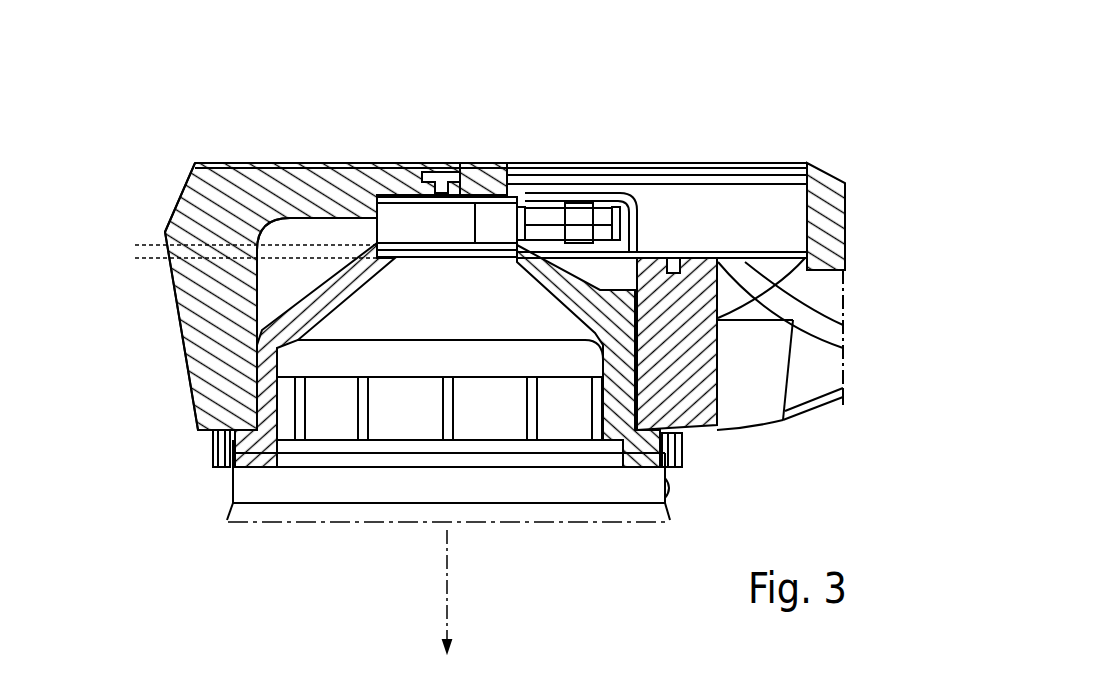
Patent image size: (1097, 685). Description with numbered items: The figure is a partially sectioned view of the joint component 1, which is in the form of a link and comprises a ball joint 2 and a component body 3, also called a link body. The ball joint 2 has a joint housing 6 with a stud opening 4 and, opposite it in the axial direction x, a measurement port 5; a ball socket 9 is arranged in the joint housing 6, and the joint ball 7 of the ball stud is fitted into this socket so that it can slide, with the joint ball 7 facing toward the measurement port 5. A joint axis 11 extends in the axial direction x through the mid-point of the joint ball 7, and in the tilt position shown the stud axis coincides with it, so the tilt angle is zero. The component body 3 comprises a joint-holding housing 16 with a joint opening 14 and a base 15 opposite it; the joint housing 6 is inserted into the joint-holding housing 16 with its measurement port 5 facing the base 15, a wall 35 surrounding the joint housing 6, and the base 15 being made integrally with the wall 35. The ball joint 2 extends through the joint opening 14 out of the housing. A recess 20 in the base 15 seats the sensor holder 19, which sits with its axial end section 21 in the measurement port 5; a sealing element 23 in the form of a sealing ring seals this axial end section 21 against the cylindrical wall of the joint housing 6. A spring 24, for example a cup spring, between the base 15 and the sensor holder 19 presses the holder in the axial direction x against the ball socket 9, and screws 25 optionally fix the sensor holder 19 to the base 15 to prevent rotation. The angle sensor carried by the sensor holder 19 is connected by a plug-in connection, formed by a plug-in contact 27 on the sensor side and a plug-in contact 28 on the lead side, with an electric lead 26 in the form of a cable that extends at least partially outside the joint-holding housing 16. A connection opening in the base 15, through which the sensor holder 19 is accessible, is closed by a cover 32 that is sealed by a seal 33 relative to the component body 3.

The joint component 1 is at (467, 86).
The ball joint 2 is at (200, 476).
The component body 3 is at (834, 165).
The stud opening 4 is at (262, 478).
The measurement port 5 is at (372, 240).
The joint housing 6 is at (290, 352).
The joint ball 7 is at (445, 447).
The ball socket 9 is at (290, 372).
The joint axis 11 is at (452, 558).
The joint opening 14 is at (213, 455).
The base 15 is at (285, 183).
The joint-holding housing 16 is at (176, 298).
The sensor holder 19 is at (410, 216).
The recess 20 is at (357, 215).
The axial end section 21 is at (133, 241).
The sealing element 23 is at (472, 250).
The spring 24 is at (425, 178).
The screws 25 is at (450, 170).
The electric lead 26 is at (843, 348).
The plug-in contact on the sensor side 27 is at (540, 213).
The plug-in contact on the lead side 28 is at (578, 212).
The cover 32 is at (670, 172).
The seal 33 is at (742, 184).
The wall 35 is at (245, 312).
The axial direction X is at (450, 618).